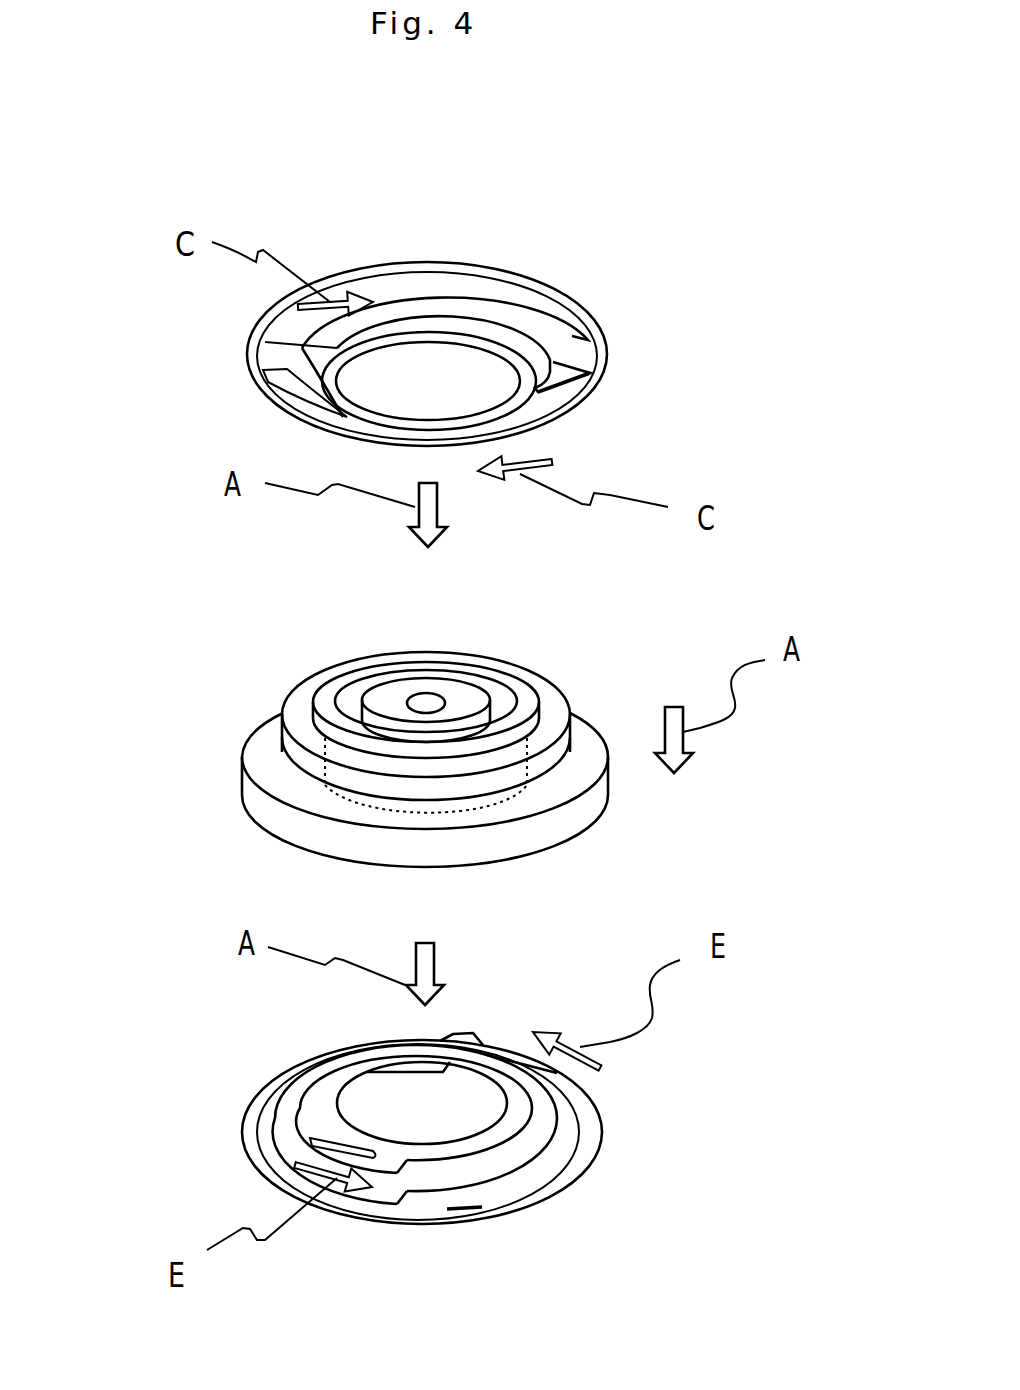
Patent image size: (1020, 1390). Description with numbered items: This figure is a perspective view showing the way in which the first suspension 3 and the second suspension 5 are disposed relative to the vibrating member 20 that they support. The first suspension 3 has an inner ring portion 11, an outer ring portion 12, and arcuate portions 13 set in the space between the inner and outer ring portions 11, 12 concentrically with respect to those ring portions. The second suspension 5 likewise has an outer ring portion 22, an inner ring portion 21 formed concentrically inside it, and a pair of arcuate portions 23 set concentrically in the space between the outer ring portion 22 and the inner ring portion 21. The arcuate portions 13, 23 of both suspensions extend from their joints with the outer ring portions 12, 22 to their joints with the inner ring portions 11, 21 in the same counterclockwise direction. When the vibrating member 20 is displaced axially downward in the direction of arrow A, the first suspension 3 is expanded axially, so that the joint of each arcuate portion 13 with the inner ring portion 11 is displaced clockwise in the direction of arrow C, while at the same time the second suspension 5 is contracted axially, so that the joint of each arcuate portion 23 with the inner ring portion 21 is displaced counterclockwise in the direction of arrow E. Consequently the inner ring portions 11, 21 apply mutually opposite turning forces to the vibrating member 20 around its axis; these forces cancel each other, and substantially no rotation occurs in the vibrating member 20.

The first suspension 3 is at (475, 314).
The inner ring portion 11 is at (465, 333).
The outer ring portion 12 is at (370, 263).
The arcuate portions 13 is at (423, 297).
The vibrating member 20 is at (606, 626).
The second suspension 5 is at (351, 1115).
The inner ring portion 21 is at (443, 1160).
The outer ring portion 22 is at (247, 1154).
The arcuate portions 23 is at (293, 1122).